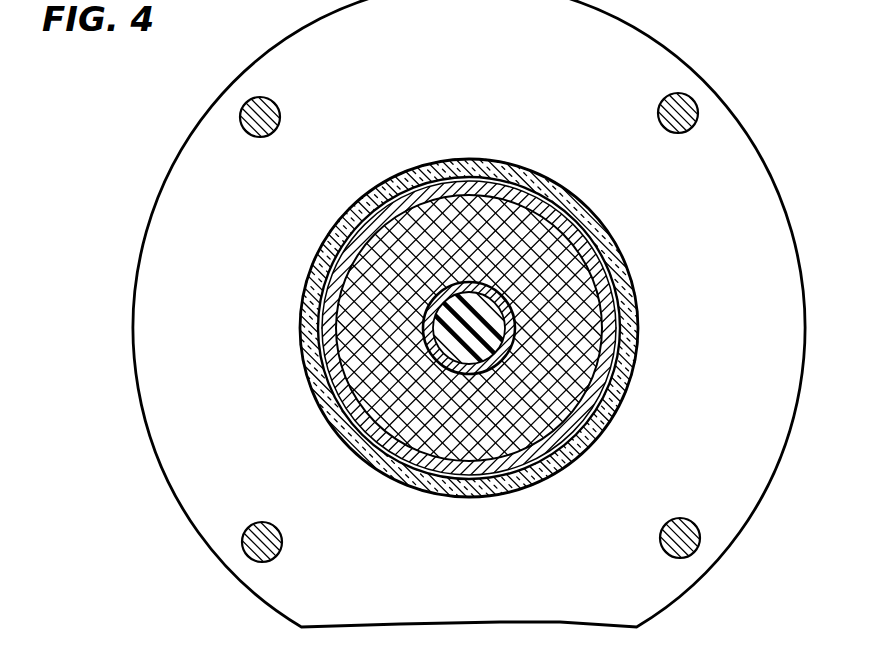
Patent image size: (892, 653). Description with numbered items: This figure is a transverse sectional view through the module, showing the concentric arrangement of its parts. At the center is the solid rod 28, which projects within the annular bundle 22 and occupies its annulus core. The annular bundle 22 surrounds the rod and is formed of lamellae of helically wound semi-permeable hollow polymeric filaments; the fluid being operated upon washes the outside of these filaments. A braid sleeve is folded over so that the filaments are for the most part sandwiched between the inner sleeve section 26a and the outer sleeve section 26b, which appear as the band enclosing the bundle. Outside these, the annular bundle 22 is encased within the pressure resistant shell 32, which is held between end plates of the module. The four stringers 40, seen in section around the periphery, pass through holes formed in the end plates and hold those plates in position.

The stringers 40 is at (240, 117).
The pressure resistant shell 32 is at (600, 243).
The outer sleeve section 26b is at (603, 312).
The inner sleeve section 26a is at (598, 432).
The annular bundle 22 is at (572, 362).
The solid rod 28 is at (443, 345).